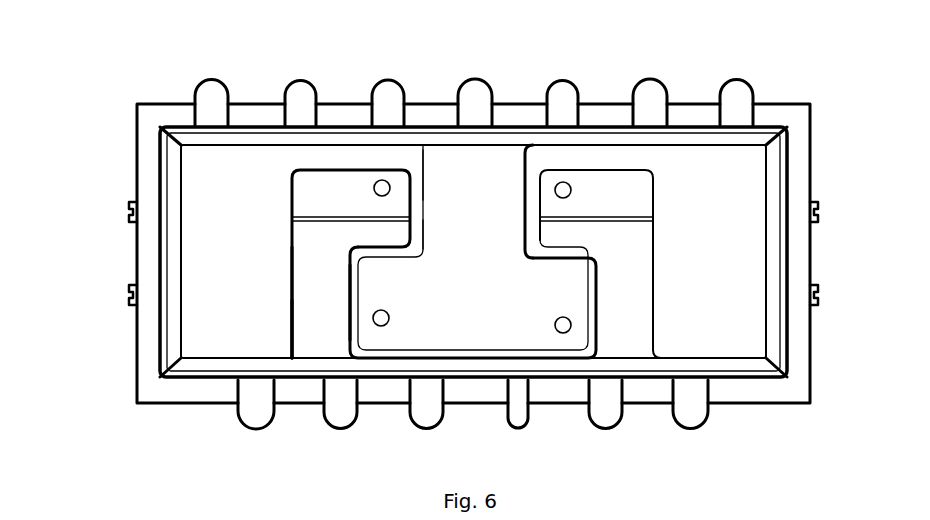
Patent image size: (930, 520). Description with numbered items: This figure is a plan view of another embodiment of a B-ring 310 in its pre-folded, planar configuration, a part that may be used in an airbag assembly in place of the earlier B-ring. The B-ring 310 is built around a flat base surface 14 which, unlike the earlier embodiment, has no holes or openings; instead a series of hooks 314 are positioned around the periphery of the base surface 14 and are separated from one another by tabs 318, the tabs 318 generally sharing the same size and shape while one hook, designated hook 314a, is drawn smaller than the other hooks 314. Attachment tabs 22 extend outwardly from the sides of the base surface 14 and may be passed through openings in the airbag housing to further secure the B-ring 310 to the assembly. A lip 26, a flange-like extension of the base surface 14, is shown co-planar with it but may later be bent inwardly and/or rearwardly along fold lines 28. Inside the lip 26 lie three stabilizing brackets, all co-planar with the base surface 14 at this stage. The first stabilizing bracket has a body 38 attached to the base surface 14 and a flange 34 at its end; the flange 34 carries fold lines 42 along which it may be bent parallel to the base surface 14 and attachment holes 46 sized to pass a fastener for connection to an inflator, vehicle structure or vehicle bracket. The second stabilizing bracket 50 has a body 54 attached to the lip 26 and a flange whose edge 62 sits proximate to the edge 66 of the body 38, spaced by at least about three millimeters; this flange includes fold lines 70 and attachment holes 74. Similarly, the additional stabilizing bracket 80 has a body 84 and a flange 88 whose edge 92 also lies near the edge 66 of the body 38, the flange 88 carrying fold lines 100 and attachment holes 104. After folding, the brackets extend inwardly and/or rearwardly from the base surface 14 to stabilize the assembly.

The B-ring 310 is at (188, 416).
The base surface 14 is at (150, 164).
The attachment tabs 22 is at (128, 206).
The lip 26 is at (242, 147).
The fold lines 28 is at (250, 128).
The hooks 314 is at (210, 92).
The hook 314a is at (522, 425).
The tabs 318 is at (240, 110).
The flange 34 is at (473, 302).
The body 38 is at (473, 247).
The fold lines 42 is at (345, 287).
The attachment holes 46 is at (389, 317).
The second stabilizing bracket 50 is at (662, 263).
The body 54 is at (643, 303).
The edge 62 is at (538, 198).
The edge 66 is at (421, 180).
The fold lines 70 is at (662, 220).
The attachment holes 74 is at (572, 189).
The additional stabilizing bracket 80 is at (280, 256).
The body 84 is at (310, 323).
The flange 88 is at (351, 264).
The edge 92 is at (420, 235).
The fold lines 100 is at (289, 218).
The attachment holes 104 is at (374, 184).